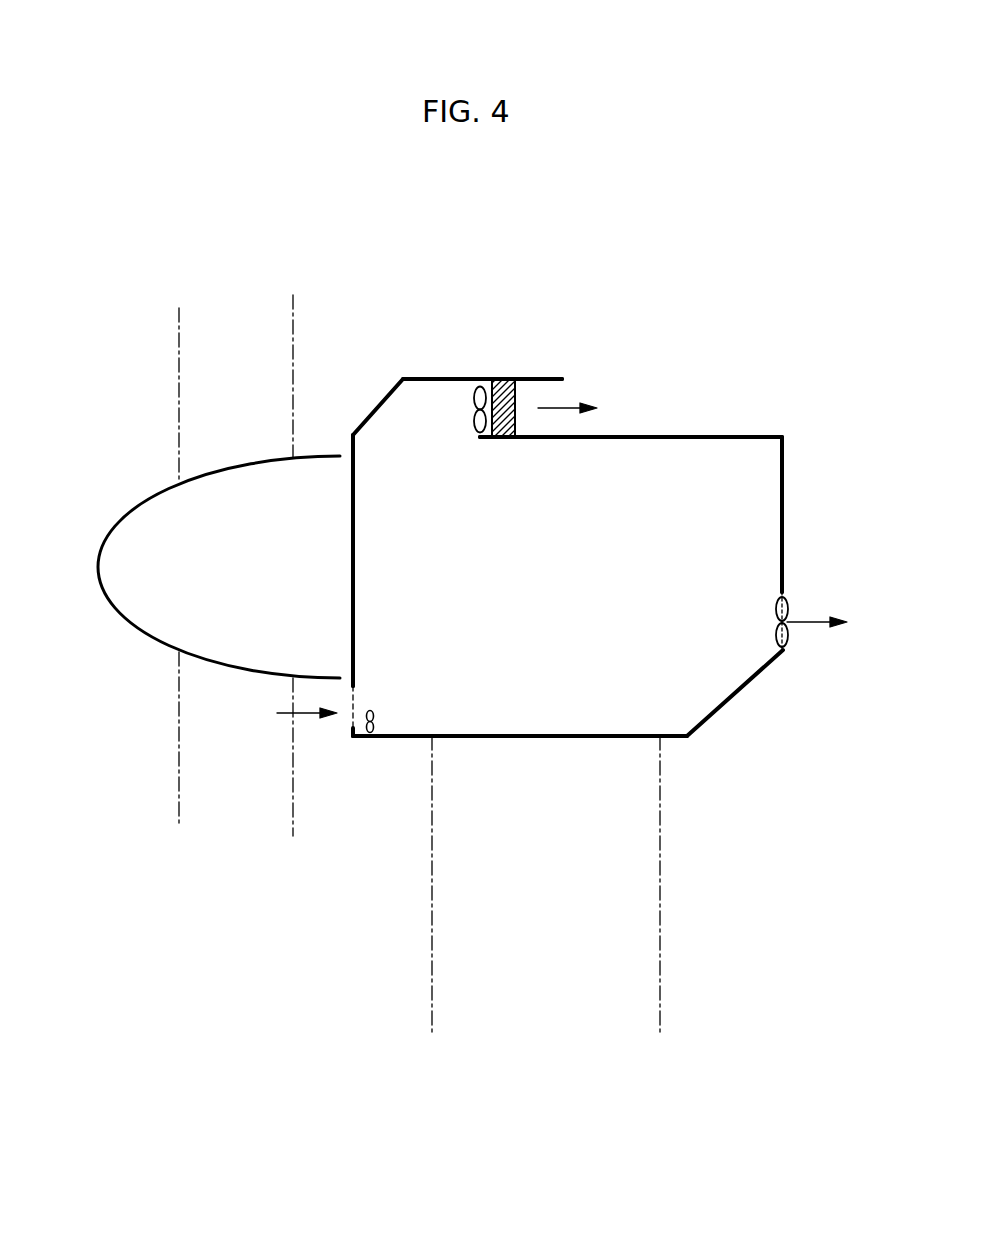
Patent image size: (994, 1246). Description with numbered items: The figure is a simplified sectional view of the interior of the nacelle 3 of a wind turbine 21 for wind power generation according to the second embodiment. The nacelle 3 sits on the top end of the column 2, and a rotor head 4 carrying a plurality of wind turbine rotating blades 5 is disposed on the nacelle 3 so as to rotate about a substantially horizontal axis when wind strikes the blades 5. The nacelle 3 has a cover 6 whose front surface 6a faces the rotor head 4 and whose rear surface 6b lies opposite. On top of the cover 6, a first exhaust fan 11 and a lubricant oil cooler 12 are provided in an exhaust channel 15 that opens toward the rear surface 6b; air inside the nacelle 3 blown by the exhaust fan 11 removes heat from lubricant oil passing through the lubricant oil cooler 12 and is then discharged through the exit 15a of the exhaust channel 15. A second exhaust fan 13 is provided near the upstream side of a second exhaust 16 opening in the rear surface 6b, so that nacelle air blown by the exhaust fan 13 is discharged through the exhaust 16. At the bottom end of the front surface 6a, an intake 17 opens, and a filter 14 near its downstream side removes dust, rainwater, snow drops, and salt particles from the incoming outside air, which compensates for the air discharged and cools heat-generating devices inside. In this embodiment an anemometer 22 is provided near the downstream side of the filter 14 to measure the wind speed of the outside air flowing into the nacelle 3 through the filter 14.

The column 2 is at (432, 921).
The nacelle 3 is at (781, 813).
The rotor head 4 is at (115, 525).
The wind turbine rotating blades 5 is at (178, 370).
The cover 6 is at (749, 436).
The front surface 6a is at (352, 557).
The rear surface 6b is at (783, 522).
The exhaust fan 11 is at (476, 417).
The lubricant oil cooler 12 is at (502, 378).
The exhaust fan 13 is at (770, 632).
The filter 14 is at (355, 708).
The exhaust channel 15 is at (525, 443).
The exit 15a is at (560, 392).
The exhaust 16 is at (786, 641).
The intake 17 is at (350, 732).
The wind turbine 21 is at (462, 282).
The anemometer 22 is at (377, 721).